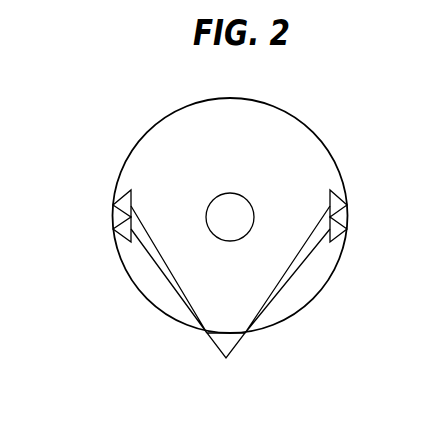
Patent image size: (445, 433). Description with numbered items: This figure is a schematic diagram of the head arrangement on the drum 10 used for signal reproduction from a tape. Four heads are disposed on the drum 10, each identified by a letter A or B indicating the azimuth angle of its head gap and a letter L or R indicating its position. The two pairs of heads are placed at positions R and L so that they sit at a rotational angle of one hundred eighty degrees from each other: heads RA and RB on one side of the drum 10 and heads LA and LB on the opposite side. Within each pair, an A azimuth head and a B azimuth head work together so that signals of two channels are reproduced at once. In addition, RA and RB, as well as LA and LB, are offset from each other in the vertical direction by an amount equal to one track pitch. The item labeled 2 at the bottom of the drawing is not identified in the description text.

The drum 10 is at (304, 123).
The object / sensor at bottom vertex 2 is at (226, 365).
The head LA is at (99, 200).
The head LB is at (99, 236).
The head RB is at (361, 200).
The head RA is at (361, 236).